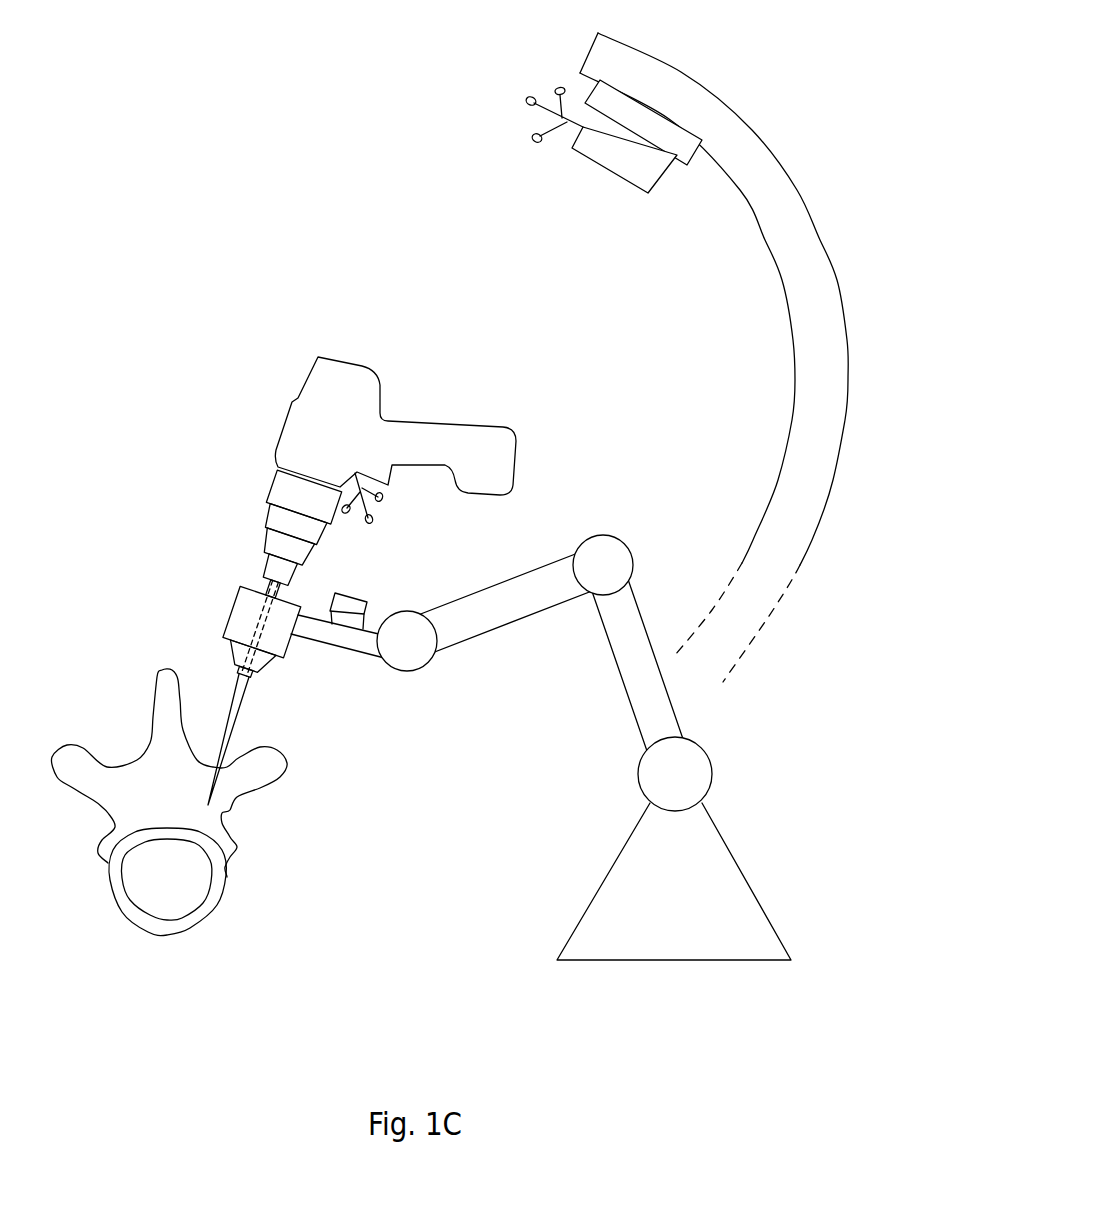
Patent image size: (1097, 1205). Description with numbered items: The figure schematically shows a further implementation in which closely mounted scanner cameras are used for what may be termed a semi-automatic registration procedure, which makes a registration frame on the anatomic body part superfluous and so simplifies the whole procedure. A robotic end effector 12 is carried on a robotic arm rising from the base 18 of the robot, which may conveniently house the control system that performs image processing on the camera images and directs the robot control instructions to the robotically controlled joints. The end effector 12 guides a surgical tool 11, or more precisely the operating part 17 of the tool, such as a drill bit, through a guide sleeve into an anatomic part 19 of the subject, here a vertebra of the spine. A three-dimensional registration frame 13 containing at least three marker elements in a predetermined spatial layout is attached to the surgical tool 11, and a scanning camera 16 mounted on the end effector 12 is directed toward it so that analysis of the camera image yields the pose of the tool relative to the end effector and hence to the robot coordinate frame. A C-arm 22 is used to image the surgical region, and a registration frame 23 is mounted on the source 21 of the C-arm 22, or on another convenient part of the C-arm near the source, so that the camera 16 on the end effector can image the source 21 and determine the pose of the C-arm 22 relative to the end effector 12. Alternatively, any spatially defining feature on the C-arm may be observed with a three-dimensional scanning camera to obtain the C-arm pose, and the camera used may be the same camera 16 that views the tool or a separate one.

The surgical tool 11 is at (504, 427).
The robotic end effector 12 is at (328, 650).
The three-dimensional registration frame 13 is at (383, 500).
The first camera 16 is at (355, 600).
The operating part 17 is at (245, 700).
The base 18 is at (665, 963).
The anatomic part 19 is at (203, 920).
The source 21 is at (650, 197).
The C-arm 22 is at (712, 92).
The registration frame 23 is at (527, 93).